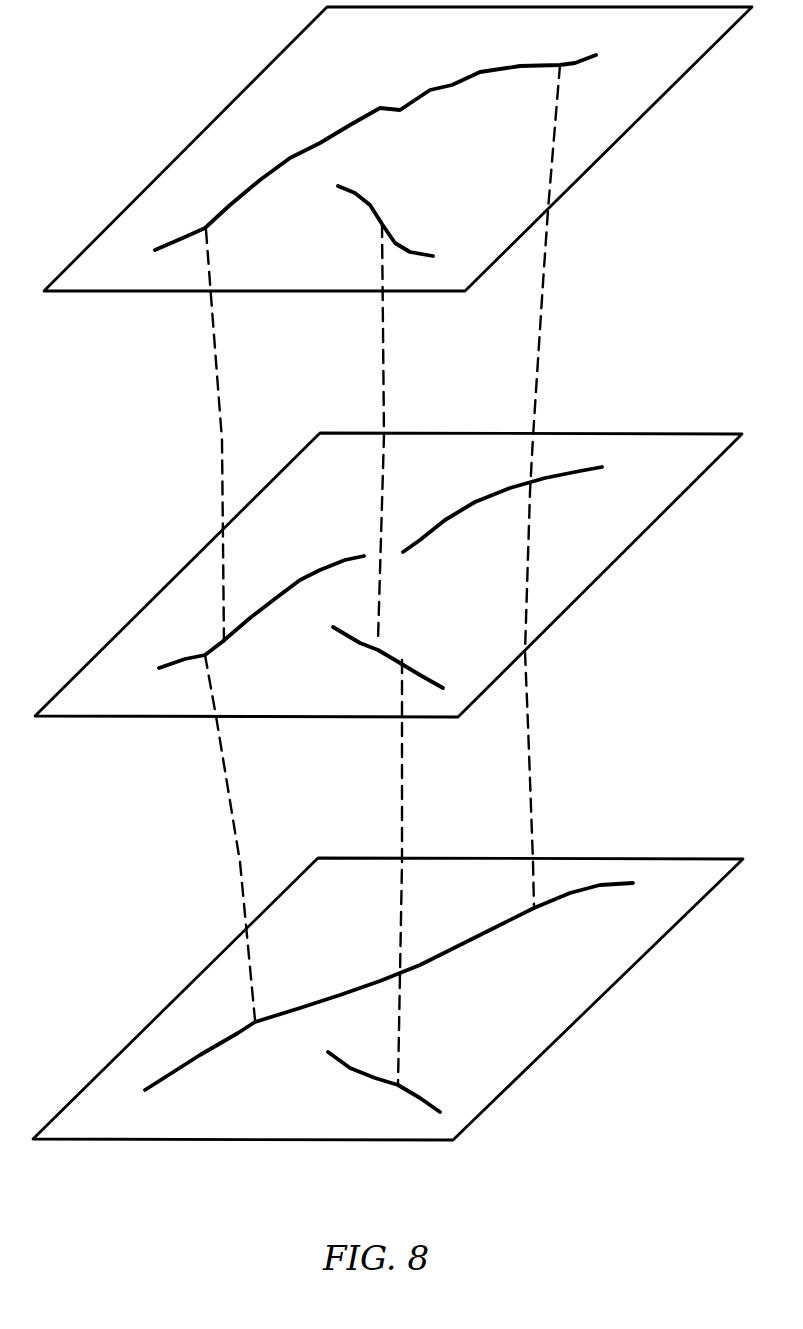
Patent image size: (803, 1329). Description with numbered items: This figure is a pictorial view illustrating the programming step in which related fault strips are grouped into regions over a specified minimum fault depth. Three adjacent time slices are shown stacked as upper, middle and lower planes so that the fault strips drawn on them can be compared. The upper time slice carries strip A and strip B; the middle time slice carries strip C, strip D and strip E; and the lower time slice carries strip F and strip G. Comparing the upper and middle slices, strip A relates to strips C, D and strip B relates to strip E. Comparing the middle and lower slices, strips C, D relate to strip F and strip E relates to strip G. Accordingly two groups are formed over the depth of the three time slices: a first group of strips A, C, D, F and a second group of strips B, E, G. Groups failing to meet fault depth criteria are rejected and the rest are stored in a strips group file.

The fault strip A is at (452, 87).
The fault strip B is at (368, 197).
The fault strip C is at (309, 578).
The fault strip D is at (475, 508).
The fault strip E is at (393, 651).
The fault strip F is at (321, 995).
The fault strip G is at (348, 1068).